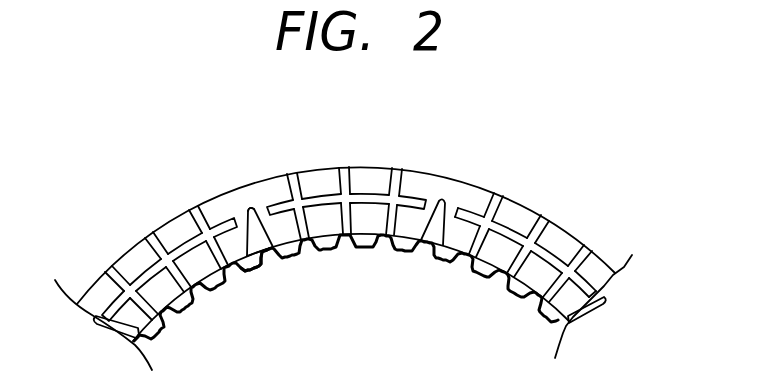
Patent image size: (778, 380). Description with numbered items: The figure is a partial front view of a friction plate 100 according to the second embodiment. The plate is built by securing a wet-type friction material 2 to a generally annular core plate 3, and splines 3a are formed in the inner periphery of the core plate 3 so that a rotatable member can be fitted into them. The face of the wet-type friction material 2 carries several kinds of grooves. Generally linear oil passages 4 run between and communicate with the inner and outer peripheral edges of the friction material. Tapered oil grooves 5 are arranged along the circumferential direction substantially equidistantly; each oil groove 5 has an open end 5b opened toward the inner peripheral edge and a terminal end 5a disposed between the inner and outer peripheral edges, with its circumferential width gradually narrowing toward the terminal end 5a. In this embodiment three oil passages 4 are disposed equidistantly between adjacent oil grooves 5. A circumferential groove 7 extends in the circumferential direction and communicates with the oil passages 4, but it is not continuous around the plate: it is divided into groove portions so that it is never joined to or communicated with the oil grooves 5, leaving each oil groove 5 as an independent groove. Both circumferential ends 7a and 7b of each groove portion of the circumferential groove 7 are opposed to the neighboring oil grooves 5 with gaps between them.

The friction plate 100 is at (552, 174).
The wet-type friction material 2 is at (265, 188).
The core plate 3 is at (420, 250).
The splines 3a is at (226, 281).
The oil passages 4 is at (400, 181).
The oil grooves 5 is at (252, 235).
The terminal end 5a is at (247, 205).
The open end 5b is at (268, 246).
The circumferential groove 7 is at (317, 195).
The circumferential end 7a is at (457, 202).
The circumferential end 7b is at (628, 263).